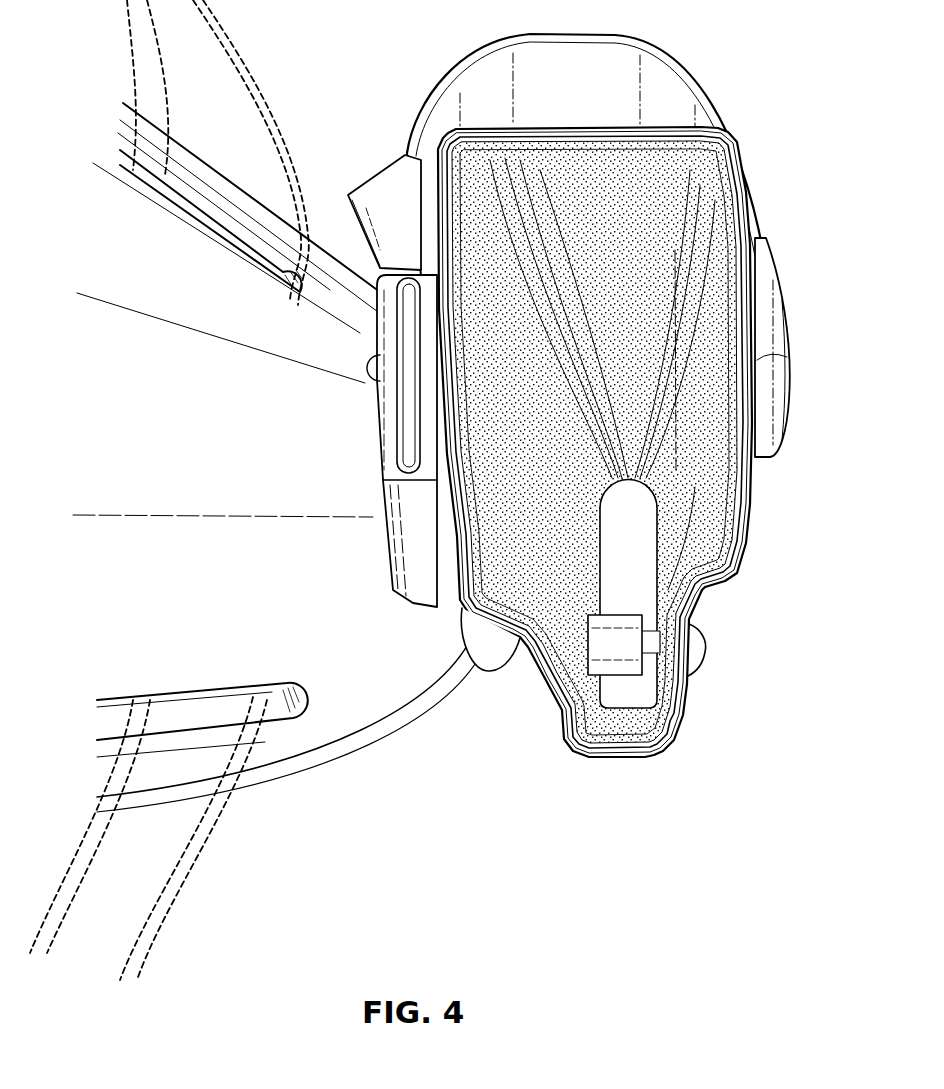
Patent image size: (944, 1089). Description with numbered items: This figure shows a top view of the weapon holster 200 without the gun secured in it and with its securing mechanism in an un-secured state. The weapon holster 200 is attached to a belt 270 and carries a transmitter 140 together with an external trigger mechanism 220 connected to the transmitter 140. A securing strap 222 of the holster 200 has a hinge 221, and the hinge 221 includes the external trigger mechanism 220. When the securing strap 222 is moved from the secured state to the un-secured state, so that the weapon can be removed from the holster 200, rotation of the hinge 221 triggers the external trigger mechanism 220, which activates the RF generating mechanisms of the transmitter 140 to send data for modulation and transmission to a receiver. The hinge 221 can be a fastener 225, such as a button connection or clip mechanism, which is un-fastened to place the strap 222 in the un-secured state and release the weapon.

The weapon holster 200 is at (646, 442).
The securing strap 222 is at (690, 78).
The external trigger mechanism 220 is at (757, 362).
The transmitter 140 is at (809, 347).
The fastener 225 is at (793, 353).
The hinge 221 is at (793, 364).
The belt 270 is at (233, 837).